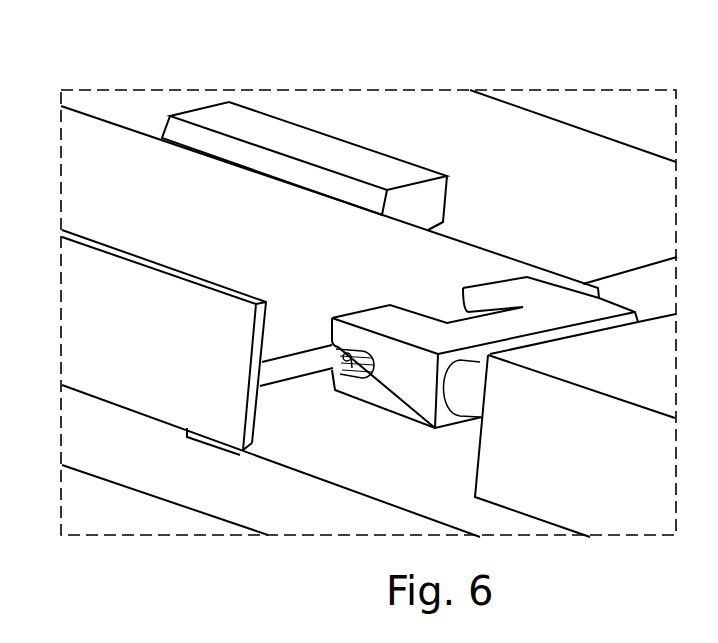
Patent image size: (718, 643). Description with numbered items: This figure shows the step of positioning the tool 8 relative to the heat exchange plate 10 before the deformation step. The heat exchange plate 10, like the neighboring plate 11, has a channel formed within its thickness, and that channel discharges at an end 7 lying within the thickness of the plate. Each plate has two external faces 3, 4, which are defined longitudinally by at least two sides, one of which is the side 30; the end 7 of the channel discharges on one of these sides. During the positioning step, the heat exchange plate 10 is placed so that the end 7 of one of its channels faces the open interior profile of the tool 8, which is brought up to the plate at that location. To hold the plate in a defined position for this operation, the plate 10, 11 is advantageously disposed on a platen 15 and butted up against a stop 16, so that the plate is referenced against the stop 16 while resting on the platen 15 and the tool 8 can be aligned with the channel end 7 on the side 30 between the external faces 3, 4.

The heat exchange plate 10 is at (57, 88).
The external face 3 is at (117, 140).
The stop 16 is at (260, 120).
The platen 15 is at (463, 113).
The tool 8 is at (397, 318).
The plate 11 is at (126, 395).
The external face 4 is at (269, 388).
The side 30 is at (270, 370).
The end 7 is at (352, 365).